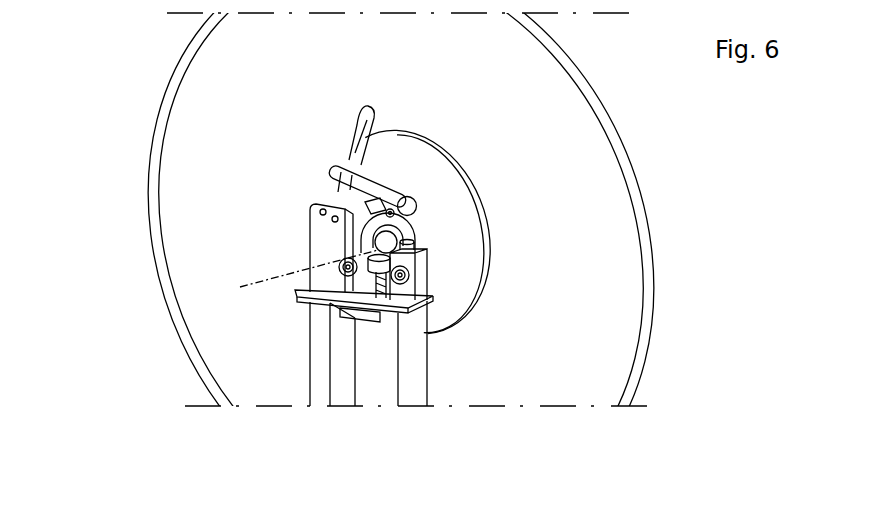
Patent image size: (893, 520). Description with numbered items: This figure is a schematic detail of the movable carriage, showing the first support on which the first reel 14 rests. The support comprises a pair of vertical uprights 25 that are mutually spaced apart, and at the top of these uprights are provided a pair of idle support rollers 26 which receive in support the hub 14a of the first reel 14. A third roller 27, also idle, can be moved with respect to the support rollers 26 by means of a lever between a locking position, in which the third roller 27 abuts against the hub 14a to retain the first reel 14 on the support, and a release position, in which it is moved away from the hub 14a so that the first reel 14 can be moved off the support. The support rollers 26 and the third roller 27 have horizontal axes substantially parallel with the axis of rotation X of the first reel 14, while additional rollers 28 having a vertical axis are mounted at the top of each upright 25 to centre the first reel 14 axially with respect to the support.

The first reel 14 is at (202, 95).
The hub 14a is at (420, 226).
The vertical uprights 25 is at (412, 375).
The support rollers 26 is at (348, 266).
The third roller 27 is at (417, 197).
The additional rollers 28 is at (390, 290).
The axis of rotation X is at (240, 287).